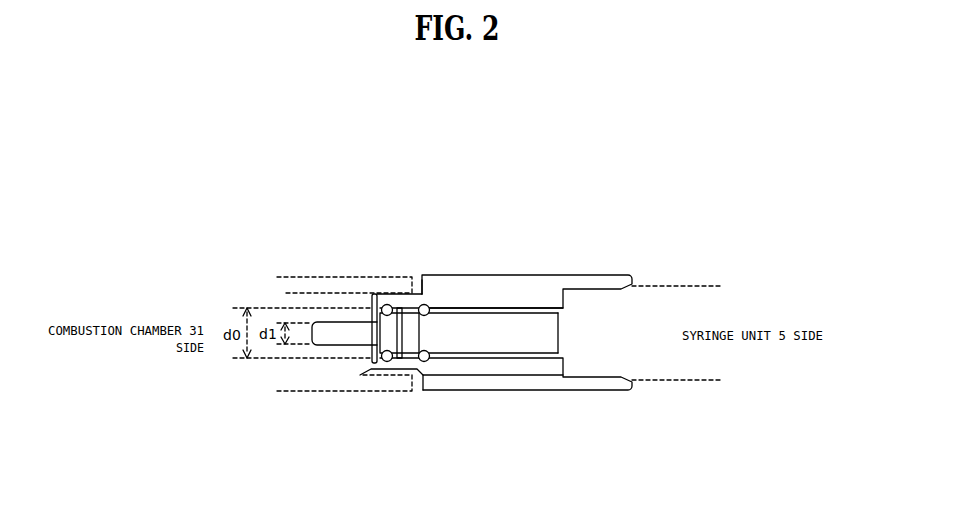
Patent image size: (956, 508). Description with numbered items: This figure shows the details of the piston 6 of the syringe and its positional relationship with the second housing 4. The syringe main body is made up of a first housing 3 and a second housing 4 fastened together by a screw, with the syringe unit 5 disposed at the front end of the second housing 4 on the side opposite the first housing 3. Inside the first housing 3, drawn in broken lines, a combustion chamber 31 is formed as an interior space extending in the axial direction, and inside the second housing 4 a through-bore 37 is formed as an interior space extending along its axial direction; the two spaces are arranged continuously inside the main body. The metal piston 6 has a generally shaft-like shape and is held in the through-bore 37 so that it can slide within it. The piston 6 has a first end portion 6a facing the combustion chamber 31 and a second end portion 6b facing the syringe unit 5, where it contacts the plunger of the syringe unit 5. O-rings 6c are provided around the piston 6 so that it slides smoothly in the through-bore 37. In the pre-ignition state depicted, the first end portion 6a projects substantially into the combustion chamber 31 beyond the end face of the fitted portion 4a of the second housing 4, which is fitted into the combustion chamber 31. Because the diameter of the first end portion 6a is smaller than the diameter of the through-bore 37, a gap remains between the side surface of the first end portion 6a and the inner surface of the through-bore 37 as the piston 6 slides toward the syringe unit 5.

The first housing 3 is at (294, 392).
The combustion chamber 31 is at (310, 301).
The second housing 4 is at (438, 376).
The fitted portion 4a is at (368, 375).
The syringe unit 5 is at (679, 381).
The piston 6 is at (401, 306).
The first end portion 6a is at (330, 331).
The second end portion 6b is at (545, 320).
The O-rings 6c is at (385, 306).
The through-bore 37 is at (507, 306).